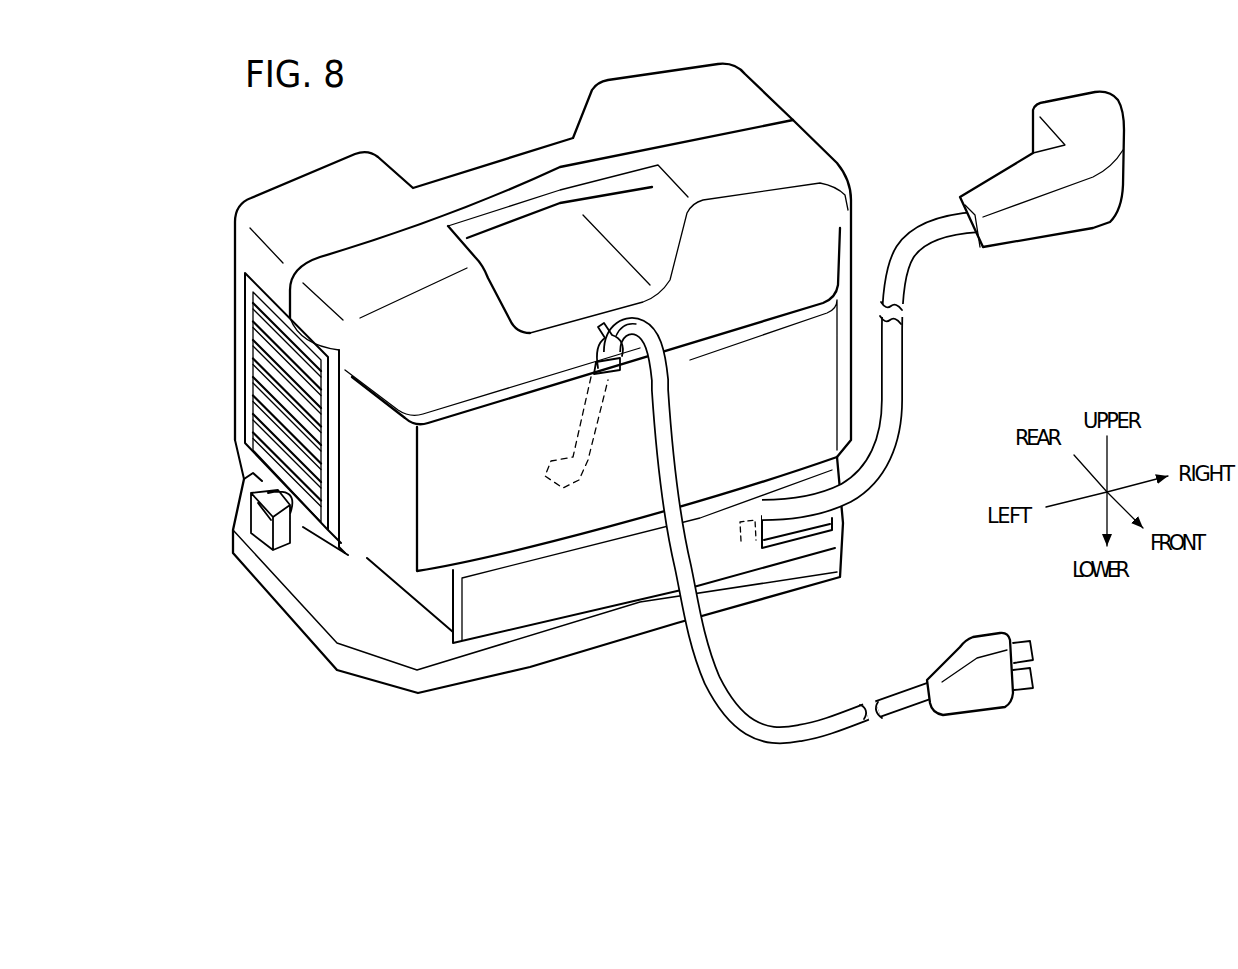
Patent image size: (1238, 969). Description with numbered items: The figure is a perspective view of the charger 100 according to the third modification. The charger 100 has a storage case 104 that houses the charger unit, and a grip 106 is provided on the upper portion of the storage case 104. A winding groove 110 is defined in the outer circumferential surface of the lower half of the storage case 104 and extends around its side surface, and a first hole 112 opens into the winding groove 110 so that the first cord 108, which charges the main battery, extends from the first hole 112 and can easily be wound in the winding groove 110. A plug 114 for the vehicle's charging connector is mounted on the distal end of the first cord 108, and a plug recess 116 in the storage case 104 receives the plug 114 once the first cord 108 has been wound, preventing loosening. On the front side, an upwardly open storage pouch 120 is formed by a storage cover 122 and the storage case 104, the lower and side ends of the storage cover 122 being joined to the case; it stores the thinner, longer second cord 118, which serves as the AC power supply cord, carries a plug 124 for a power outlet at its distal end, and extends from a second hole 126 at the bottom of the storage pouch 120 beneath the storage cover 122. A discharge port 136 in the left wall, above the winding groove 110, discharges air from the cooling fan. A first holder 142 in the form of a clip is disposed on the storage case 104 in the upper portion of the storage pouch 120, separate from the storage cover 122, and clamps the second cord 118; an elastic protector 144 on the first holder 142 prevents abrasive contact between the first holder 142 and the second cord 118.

The charger 100 is at (588, 74).
The storage case 104 is at (750, 110).
The grip 106 is at (505, 168).
The first cord 108 is at (915, 240).
The winding groove 110 is at (801, 528).
The first hole 112 is at (745, 545).
The plug 114 is at (1062, 117).
The plug recess 116 is at (426, 625).
The second cord 118 is at (713, 695).
The storage pouch 120 is at (802, 240).
The storage cover 122 is at (783, 381).
The plug 124 is at (980, 647).
The second hole 126 is at (557, 458).
The discharge port 136 is at (278, 401).
The first holder 142 is at (590, 340).
The protector 144 is at (630, 327).